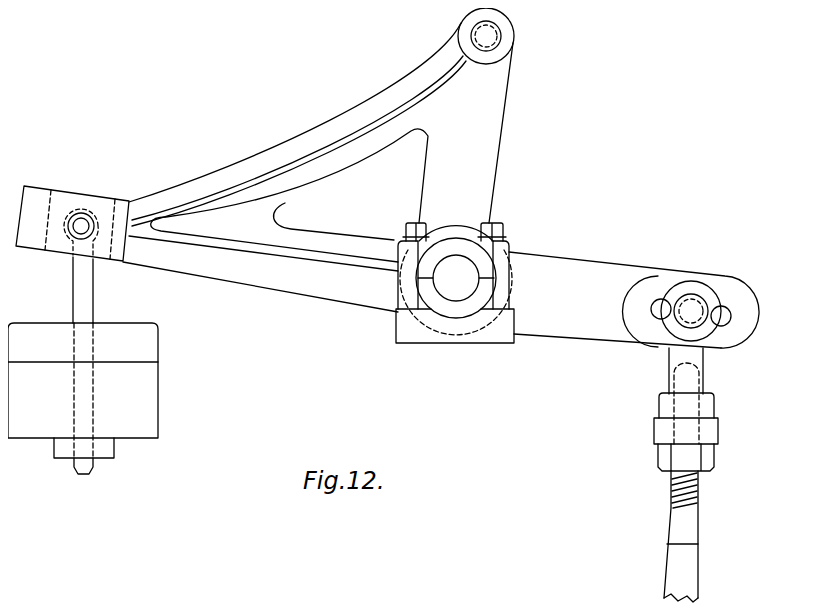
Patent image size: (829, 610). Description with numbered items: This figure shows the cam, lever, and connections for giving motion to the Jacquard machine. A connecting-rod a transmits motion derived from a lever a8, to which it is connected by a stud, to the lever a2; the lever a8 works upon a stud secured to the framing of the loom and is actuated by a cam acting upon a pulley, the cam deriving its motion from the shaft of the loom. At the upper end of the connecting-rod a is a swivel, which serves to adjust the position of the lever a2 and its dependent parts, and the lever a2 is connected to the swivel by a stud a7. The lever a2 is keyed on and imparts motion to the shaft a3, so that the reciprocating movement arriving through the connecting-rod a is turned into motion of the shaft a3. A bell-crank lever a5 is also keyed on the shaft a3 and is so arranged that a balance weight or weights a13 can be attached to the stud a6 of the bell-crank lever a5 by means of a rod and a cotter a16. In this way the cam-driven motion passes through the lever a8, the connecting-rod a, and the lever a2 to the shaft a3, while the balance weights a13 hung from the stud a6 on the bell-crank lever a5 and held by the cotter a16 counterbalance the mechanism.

The connecting-rod a is at (697, 497).
The lever a2 is at (441, 292).
The shaft a3 is at (455, 283).
The bell-crank lever a5 is at (321, 135).
The stud a6 is at (78, 222).
The stud a7 is at (696, 303).
The lever a8 is at (72, 365).
The balance weight a13 is at (83, 380).
The cotter a16 is at (113, 448).